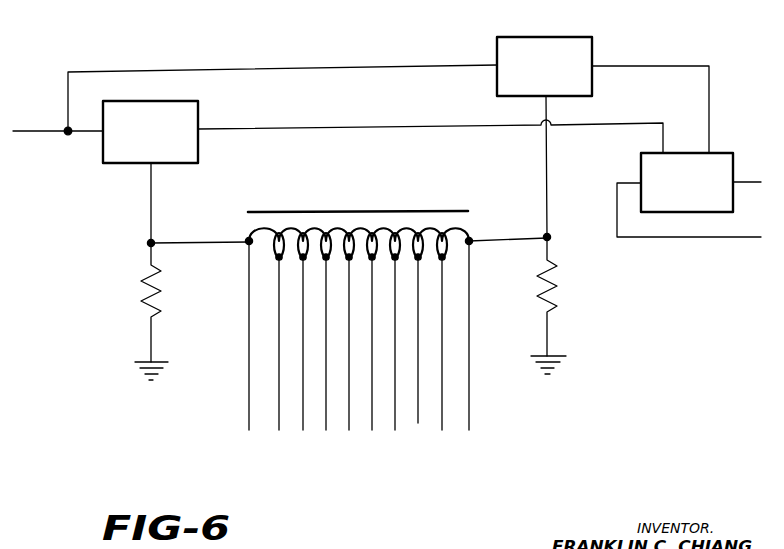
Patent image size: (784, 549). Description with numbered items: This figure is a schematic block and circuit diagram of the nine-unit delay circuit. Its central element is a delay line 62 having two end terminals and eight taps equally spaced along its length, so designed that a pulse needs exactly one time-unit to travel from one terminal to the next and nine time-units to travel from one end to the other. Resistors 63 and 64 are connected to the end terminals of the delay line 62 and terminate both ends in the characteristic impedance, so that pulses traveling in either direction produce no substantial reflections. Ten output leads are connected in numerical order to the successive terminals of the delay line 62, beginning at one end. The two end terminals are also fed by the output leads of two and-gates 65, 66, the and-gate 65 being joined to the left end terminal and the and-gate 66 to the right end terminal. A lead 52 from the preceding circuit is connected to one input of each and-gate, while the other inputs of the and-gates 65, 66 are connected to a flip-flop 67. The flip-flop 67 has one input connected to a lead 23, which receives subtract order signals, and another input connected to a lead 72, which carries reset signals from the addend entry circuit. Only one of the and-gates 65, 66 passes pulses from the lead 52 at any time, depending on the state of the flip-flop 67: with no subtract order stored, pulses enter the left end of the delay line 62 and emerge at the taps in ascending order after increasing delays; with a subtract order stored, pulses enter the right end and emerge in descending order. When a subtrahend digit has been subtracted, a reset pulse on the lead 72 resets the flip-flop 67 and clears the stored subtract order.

The lead 52 is at (41, 105).
The and-gate 65 is at (194, 109).
The and-gate 66 is at (497, 93).
The flip-flop 67 is at (641, 160).
The lead 23 is at (747, 181).
The lead 72 is at (706, 238).
The delay line 62 is at (381, 180).
The resistor 63 is at (143, 304).
The resistor 64 is at (540, 293).